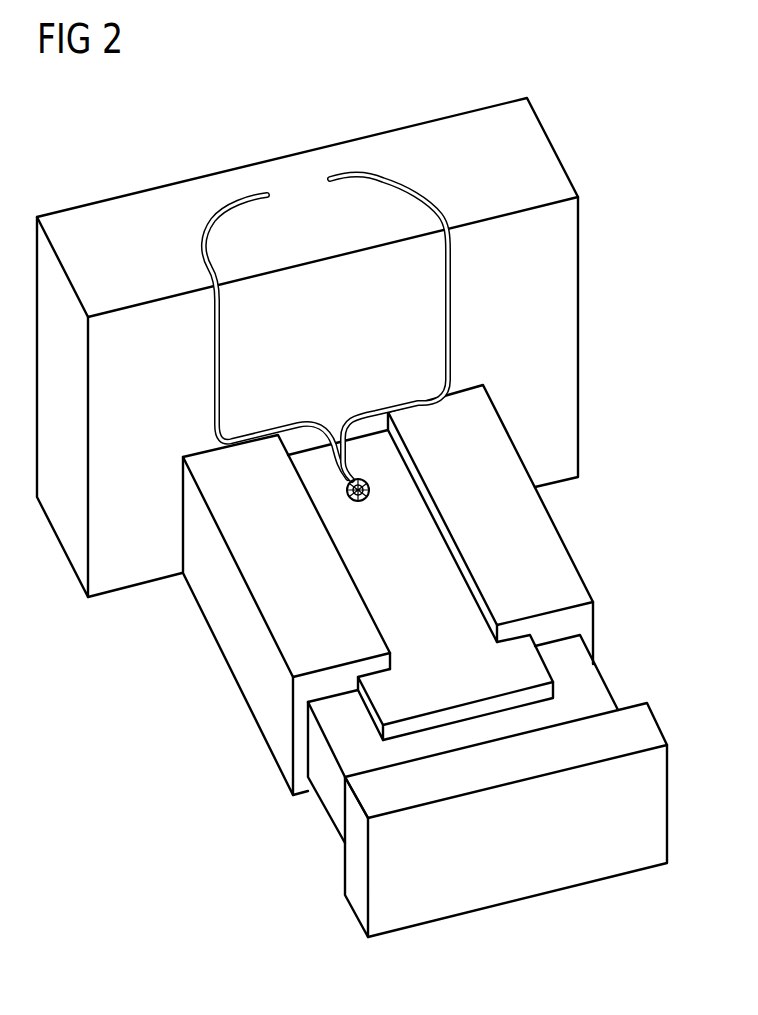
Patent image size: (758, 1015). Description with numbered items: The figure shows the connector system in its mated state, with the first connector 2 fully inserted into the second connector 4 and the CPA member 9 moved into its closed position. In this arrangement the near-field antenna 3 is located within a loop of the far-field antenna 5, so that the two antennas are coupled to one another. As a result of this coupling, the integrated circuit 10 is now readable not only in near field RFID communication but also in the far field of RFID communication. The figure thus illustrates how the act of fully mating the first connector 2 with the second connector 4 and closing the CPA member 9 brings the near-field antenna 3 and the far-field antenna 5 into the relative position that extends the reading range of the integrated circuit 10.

The first connector 2 is at (250, 780).
The near-field antenna 3 is at (347, 496).
The second connector 4 is at (602, 168).
The far-field antenna 5 is at (347, 490).
The CPA member 9 is at (540, 675).
The integrated circuit 10 is at (368, 484).